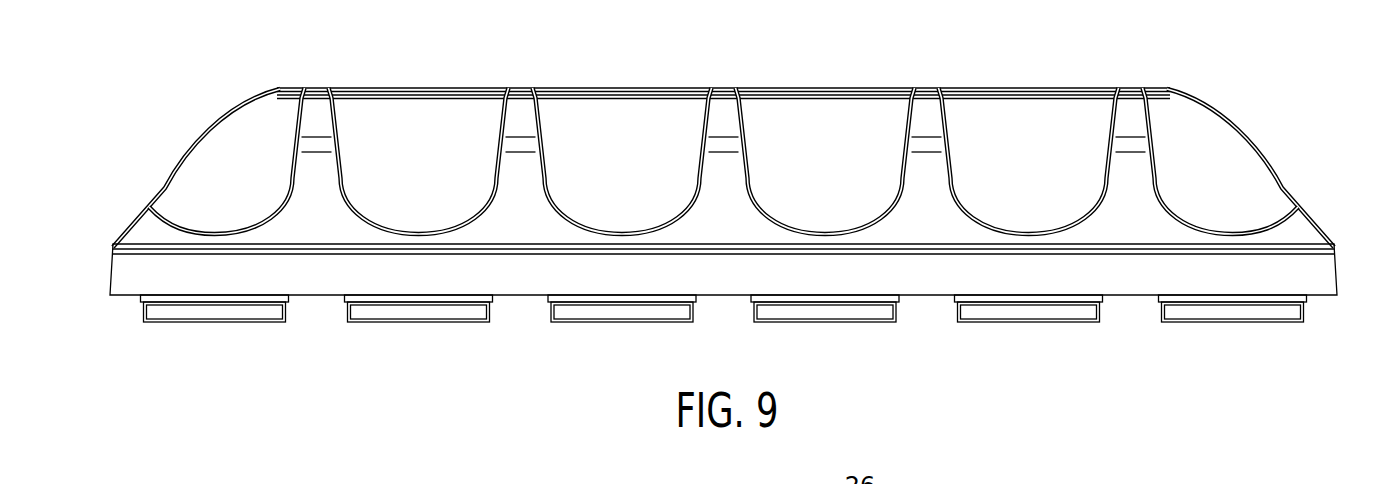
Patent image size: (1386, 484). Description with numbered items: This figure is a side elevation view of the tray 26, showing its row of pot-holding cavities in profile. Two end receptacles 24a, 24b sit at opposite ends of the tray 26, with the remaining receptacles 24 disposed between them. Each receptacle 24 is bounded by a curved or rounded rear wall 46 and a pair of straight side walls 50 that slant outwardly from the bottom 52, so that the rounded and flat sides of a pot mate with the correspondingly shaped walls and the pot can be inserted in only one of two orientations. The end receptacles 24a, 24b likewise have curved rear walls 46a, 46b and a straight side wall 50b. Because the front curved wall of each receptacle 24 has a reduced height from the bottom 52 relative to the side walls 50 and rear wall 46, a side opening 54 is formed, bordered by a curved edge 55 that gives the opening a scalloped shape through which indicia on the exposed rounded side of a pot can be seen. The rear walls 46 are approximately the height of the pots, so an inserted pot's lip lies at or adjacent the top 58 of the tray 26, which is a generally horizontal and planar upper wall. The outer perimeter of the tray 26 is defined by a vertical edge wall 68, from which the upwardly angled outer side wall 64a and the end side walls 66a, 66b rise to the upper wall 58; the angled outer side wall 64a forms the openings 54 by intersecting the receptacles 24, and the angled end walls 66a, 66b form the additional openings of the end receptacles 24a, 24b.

The receptacle 24 is at (770, 112).
The end receptacle 24a is at (235, 122).
The end receptacle 24b is at (1220, 130).
The tray 26 is at (315, 352).
The rear curved wall 46 is at (407, 172).
The curved rear wall 46a is at (255, 172).
The curved rear wall 46b is at (1222, 172).
The side wall 50 is at (337, 113).
The straight side wall 50b is at (1148, 120).
The bottom 52 is at (458, 322).
The side opening 54 is at (431, 215).
The curved edge 55 is at (680, 213).
The top 58 is at (933, 100).
The outer side wall 64a is at (506, 222).
The end side wall 66a is at (1263, 153).
The end side wall 66b is at (167, 186).
The vertical edge wall 68 is at (1227, 283).